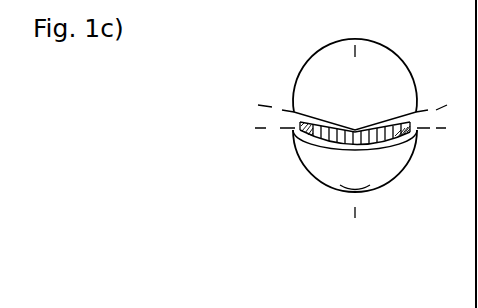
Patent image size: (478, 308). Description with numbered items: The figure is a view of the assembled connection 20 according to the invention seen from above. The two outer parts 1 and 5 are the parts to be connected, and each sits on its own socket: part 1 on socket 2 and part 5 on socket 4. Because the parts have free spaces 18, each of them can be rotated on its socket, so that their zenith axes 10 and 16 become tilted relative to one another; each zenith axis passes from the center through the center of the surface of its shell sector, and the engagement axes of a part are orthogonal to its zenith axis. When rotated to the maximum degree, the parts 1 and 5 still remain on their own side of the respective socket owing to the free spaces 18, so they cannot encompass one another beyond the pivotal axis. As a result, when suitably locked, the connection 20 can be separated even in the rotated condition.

The outer part 1 is at (325, 168).
The socket 2 is at (400, 142).
The socket 4 is at (300, 118).
The outer part 5 is at (357, 88).
The zenith axis 10 is at (363, 213).
The zenith axis 16 is at (344, 46).
The free spaces 18 is at (258, 112).
The connection 20 is at (274, 284).